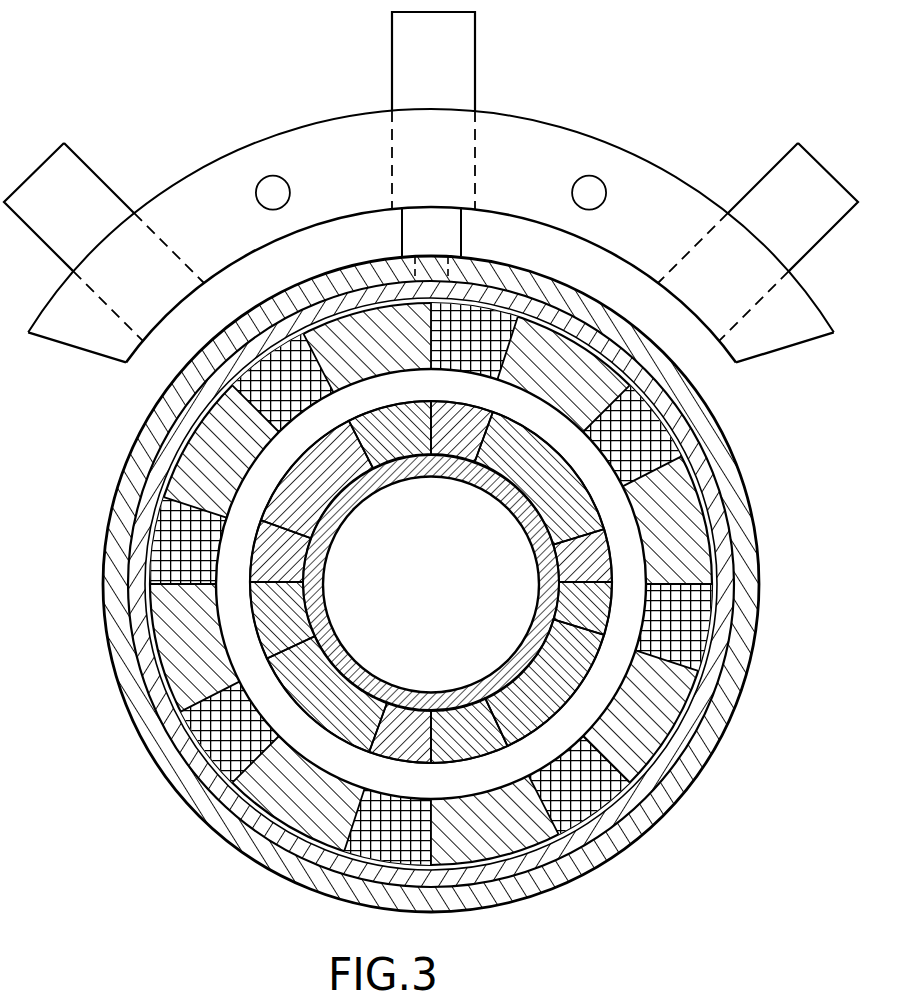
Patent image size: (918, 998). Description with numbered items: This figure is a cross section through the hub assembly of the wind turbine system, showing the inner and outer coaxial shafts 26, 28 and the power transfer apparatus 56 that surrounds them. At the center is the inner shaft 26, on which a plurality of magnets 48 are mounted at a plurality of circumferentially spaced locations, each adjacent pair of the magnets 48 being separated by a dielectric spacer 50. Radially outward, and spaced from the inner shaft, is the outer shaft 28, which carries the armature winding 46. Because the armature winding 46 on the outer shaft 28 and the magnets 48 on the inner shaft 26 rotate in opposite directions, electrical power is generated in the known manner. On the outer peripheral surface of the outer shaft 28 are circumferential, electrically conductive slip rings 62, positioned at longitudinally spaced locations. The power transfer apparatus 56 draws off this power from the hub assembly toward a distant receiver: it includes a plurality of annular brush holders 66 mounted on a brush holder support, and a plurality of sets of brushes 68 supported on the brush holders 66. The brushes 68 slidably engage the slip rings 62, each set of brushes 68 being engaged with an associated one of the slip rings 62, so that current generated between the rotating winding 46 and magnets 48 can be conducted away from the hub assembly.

The inner shaft 26 is at (547, 548).
The outer shaft 28 is at (208, 778).
The armature winding 46 is at (160, 543).
The magnets 48 is at (298, 512).
The dielectric spacer 50 is at (333, 635).
The power transfer apparatus 56 is at (431, 187).
The slip rings 62 is at (733, 500).
The brush holders 66 is at (525, 140).
The brushes 68 is at (678, 330).